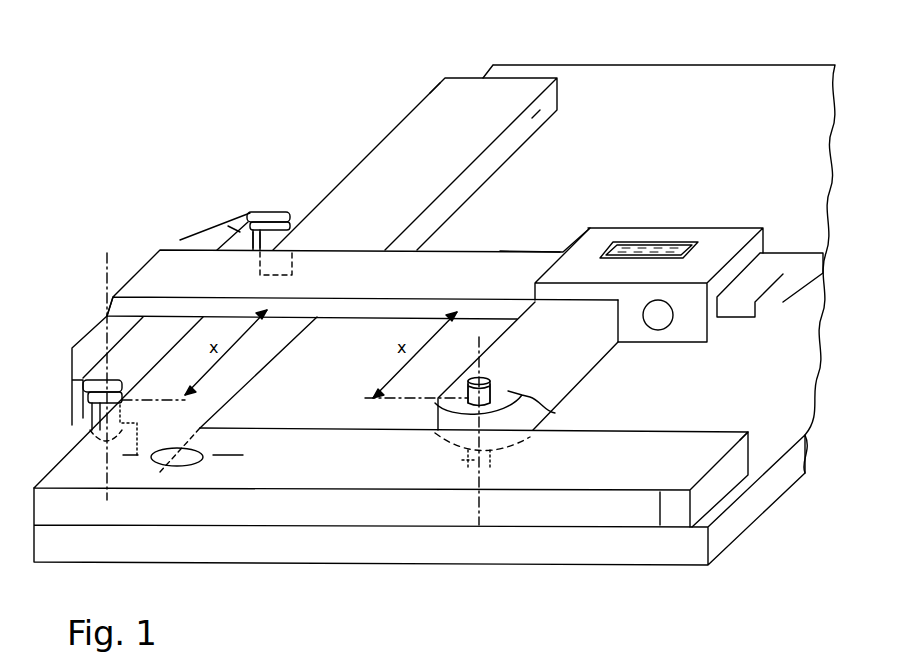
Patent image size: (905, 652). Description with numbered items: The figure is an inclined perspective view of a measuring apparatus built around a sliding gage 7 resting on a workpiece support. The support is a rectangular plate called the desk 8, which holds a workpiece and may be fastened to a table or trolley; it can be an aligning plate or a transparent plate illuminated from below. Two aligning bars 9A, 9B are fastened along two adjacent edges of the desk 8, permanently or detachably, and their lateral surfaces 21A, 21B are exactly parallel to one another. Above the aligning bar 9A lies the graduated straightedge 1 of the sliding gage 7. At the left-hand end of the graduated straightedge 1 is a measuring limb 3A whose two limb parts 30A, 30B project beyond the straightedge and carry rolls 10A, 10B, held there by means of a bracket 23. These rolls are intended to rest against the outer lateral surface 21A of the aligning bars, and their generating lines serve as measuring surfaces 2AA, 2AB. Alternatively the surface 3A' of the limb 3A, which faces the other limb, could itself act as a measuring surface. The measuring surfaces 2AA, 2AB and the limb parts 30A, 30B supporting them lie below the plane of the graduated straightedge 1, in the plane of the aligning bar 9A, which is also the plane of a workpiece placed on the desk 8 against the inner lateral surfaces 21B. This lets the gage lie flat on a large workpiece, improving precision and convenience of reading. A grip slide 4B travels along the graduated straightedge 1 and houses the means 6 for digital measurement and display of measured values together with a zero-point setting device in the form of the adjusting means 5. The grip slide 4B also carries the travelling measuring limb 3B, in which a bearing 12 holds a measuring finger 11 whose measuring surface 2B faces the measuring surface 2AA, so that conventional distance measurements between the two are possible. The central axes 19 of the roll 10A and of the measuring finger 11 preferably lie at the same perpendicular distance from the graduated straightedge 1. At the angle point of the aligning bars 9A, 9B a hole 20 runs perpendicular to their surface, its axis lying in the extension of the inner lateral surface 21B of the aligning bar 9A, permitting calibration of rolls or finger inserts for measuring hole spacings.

The graduated straightedge 1 is at (366, 278).
The measuring limb 3A is at (75, 283).
The surface of the limb 3A 3A' is at (213, 201).
The measuring limb 3B is at (555, 413).
The grip slide 4B is at (613, 228).
The adjusting means 5 is at (656, 322).
The means for digital measurement and display 6 is at (655, 245).
The sliding gage 7 is at (532, 250).
The desk 8 is at (347, 547).
The aligning bar 9A is at (380, 157).
The aligning bar 9B is at (313, 510).
The roll 10A is at (93, 414).
The roll 10B is at (258, 210).
The measuring finger 11 is at (491, 453).
The bearing 12 is at (440, 413).
The central axes 19 is at (103, 490).
The hole 20 is at (228, 432).
The outer lateral surface 21A is at (425, 95).
The inner lateral surface 21B is at (530, 122).
The bracket 23 is at (263, 207).
The measuring surface 2AA is at (128, 460).
The measuring surface 2AB is at (322, 262).
The measuring surface 2B is at (468, 470).
The limb part 30A is at (88, 347).
The limb part 30B is at (200, 228).